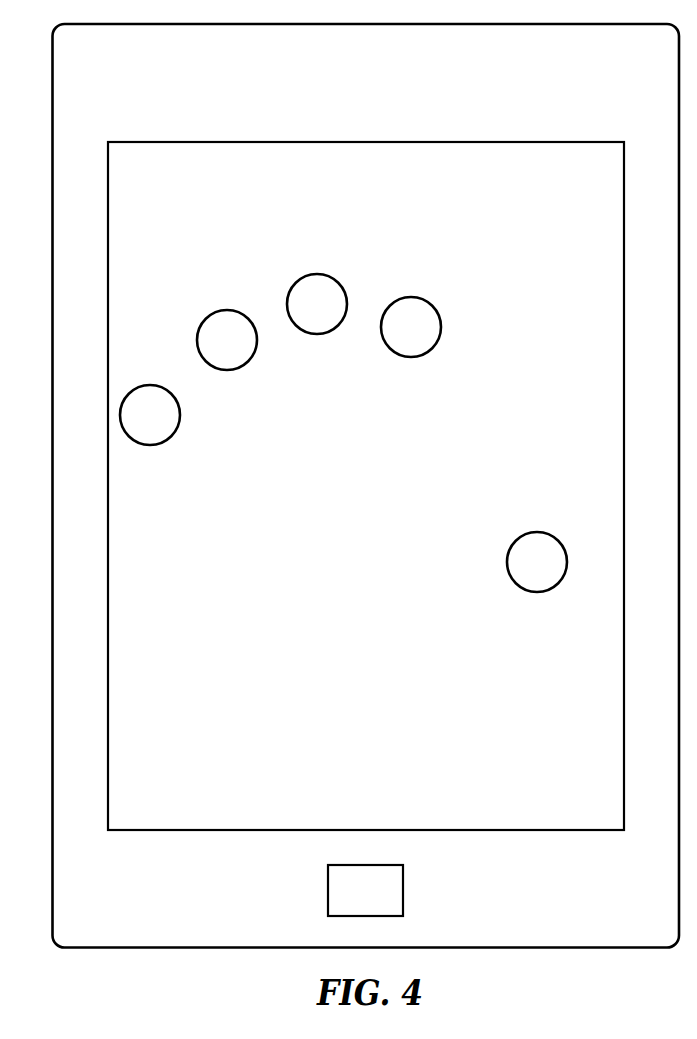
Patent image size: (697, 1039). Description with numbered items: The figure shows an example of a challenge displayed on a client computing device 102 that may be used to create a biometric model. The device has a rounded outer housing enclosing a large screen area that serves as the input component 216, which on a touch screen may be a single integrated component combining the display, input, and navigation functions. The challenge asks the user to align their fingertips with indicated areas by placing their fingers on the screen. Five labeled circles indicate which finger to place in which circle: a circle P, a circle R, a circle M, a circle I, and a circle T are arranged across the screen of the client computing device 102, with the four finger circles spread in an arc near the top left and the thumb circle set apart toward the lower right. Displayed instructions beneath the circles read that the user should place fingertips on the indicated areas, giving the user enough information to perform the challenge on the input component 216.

The client computing device 102 is at (366, 486).
The input component 216 is at (321, 486).
The pinky fingertip indicator P is at (150, 415).
The ring fingertip indicator R is at (227, 340).
The middle fingertip indicator M is at (317, 304).
The index fingertip indicator I is at (411, 327).
The thumb fingertip indicator T is at (537, 562).